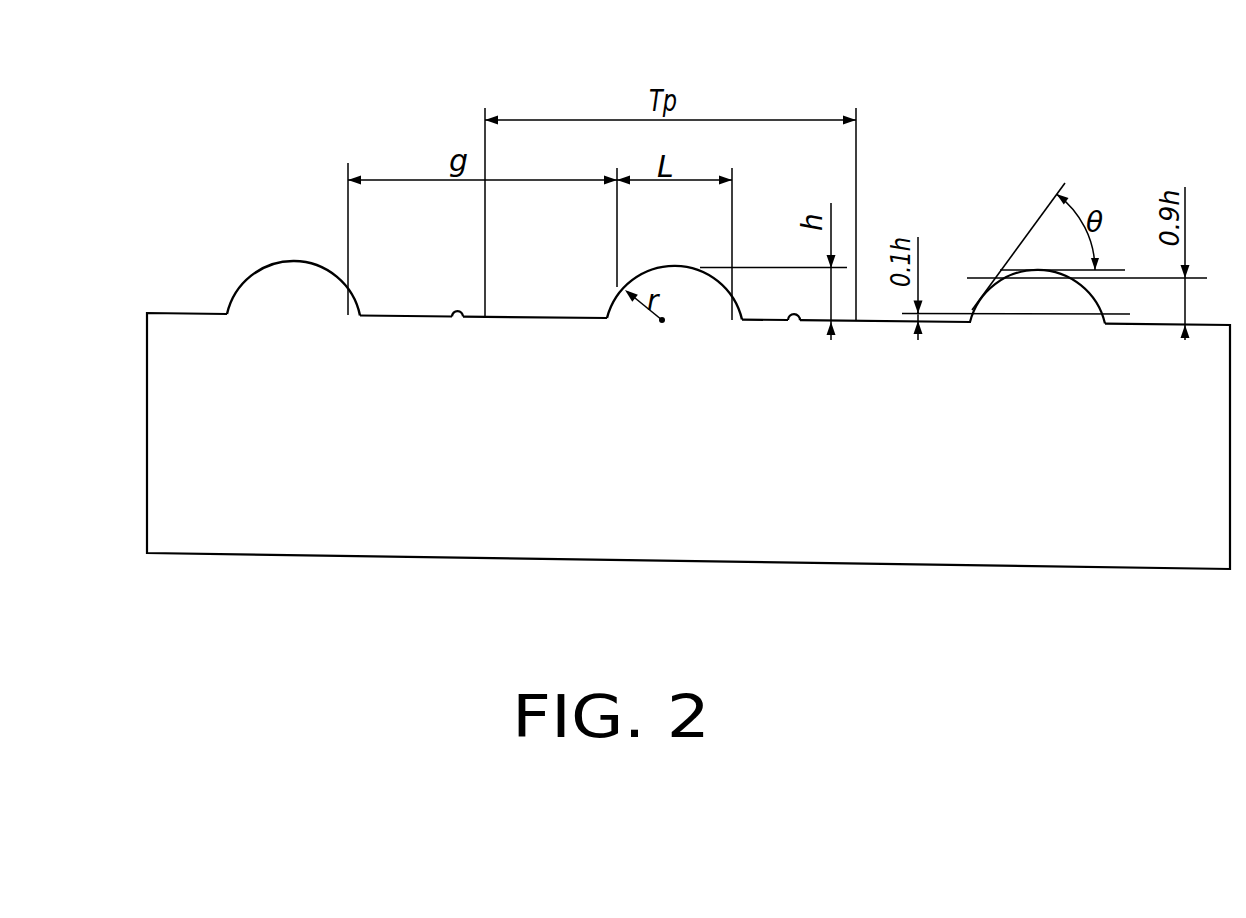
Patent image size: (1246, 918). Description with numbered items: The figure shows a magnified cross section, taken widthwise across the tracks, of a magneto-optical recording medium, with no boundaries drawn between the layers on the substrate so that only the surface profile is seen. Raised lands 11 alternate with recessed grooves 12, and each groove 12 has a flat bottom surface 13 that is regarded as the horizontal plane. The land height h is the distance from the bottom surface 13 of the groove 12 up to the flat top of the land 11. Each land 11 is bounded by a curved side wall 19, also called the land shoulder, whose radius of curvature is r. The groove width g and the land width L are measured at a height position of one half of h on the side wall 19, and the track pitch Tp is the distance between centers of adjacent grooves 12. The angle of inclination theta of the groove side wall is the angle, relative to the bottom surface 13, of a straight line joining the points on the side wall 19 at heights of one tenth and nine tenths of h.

The land 11 is at (246, 262).
The groove 12 is at (399, 299).
The bottom surface 13 is at (451, 317).
The side wall 19 is at (614, 285).